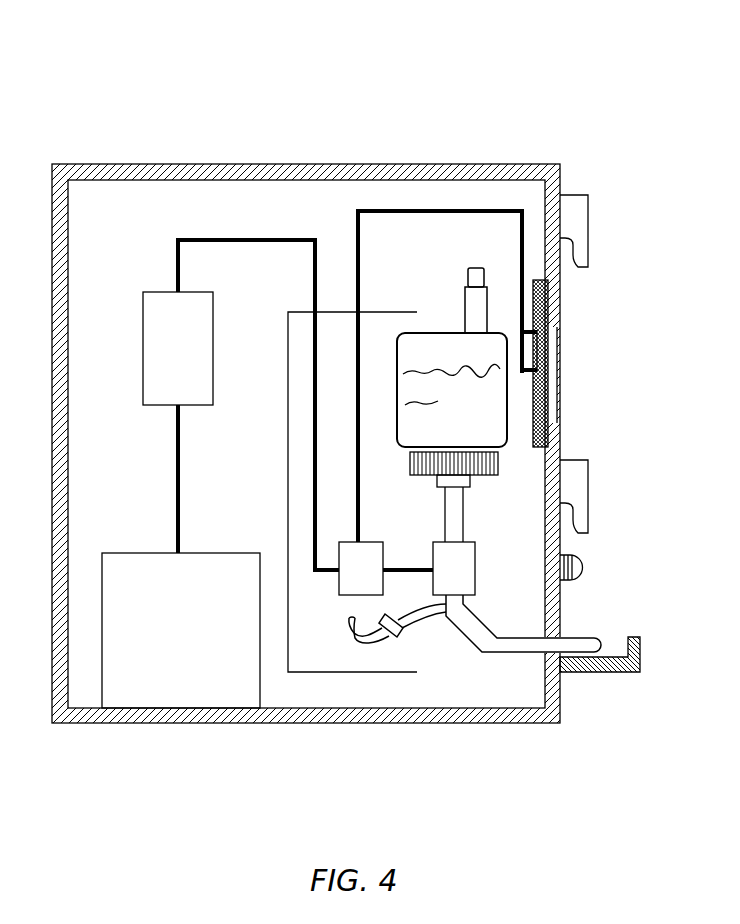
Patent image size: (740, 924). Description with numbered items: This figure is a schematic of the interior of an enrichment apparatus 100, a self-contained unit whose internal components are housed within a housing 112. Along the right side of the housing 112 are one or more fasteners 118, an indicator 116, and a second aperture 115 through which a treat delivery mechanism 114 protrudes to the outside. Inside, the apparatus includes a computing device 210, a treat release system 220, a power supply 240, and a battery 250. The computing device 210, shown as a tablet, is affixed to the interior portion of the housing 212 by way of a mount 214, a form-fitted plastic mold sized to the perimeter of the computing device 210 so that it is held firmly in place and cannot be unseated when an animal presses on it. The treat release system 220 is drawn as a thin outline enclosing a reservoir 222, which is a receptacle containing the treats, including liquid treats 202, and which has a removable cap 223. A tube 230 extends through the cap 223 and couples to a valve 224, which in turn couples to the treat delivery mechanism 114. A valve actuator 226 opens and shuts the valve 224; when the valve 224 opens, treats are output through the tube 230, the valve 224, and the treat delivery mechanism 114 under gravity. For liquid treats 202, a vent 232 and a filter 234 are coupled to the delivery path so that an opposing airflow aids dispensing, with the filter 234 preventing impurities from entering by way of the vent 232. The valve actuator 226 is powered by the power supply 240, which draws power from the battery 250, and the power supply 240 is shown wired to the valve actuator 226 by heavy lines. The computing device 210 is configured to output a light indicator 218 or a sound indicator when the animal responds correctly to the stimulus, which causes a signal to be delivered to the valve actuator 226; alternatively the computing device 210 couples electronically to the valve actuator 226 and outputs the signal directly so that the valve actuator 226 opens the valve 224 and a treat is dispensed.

The enrichment apparatus 100 is at (72, 64).
The housing 112 is at (530, 723).
The treat delivery mechanism 114 is at (583, 629).
The second aperture 115 is at (560, 641).
The indicator 116 is at (583, 568).
The fasteners 118 is at (588, 218).
The liquid treats 202 is at (420, 403).
The computing device 210 is at (533, 280).
The housing 212 is at (220, 198).
The mount 214 is at (551, 299).
The light indicator 218 is at (540, 368).
The treat release system 220 is at (288, 388).
The reservoir 222 is at (448, 333).
The removable cap 223 is at (490, 476).
The valve 224 is at (366, 542).
The valve actuator 226 is at (476, 549).
The tube 230 is at (463, 511).
The vent 232 is at (414, 620).
The filter 234 is at (395, 637).
The power supply 240 is at (143, 316).
The battery 250 is at (130, 553).